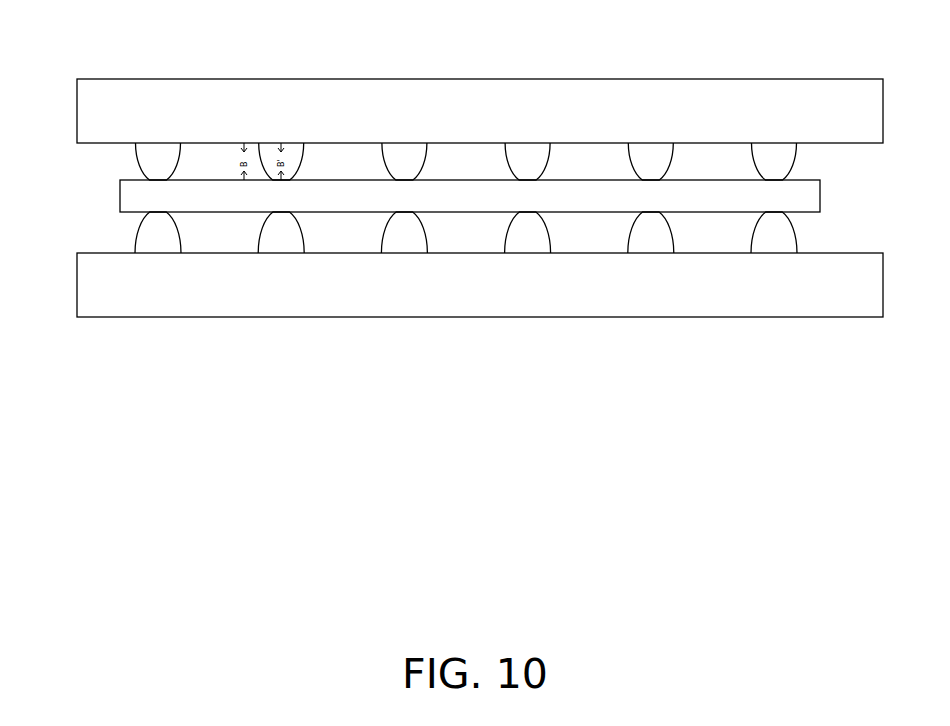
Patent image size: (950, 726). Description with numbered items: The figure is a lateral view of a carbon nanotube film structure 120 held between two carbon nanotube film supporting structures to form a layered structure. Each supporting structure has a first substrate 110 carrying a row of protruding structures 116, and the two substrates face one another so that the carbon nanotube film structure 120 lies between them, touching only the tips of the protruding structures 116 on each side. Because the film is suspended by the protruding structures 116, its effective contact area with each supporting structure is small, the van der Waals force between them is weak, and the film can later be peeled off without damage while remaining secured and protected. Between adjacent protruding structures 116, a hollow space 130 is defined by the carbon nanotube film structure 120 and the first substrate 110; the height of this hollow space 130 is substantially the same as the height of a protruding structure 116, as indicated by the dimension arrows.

The first substrate 110 is at (669, 97).
The protruding structure 116 is at (148, 158).
The carbon nanotube film structure 120 is at (143, 199).
The hollow space 130 is at (219, 158).